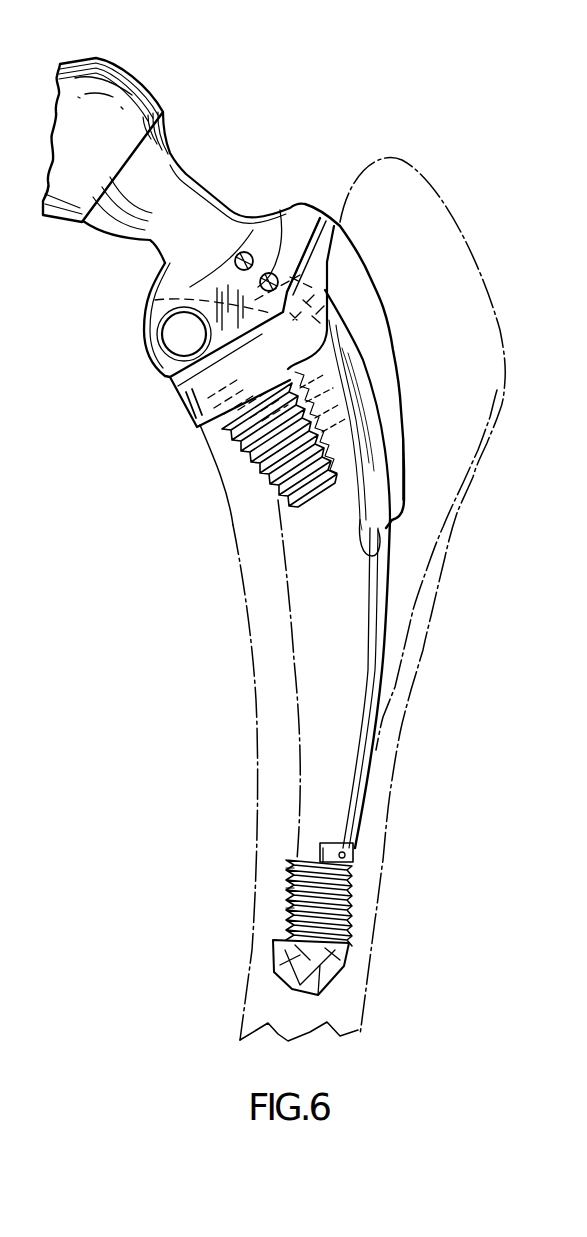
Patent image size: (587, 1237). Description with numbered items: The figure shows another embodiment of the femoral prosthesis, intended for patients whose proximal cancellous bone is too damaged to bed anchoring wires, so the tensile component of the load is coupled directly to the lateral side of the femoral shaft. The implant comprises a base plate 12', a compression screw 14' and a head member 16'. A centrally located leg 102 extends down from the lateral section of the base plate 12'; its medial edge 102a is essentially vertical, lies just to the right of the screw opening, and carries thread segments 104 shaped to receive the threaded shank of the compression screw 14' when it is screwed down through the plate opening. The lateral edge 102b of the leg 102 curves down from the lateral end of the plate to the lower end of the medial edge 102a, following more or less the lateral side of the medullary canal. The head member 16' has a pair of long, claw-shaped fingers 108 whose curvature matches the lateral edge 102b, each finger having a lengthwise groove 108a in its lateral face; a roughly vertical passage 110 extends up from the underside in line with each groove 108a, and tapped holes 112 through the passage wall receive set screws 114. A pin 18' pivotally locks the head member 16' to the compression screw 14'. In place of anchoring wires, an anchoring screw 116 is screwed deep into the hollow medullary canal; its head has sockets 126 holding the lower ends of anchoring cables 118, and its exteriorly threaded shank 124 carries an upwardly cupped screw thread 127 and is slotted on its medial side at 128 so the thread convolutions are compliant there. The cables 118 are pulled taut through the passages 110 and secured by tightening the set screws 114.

The head member 16' is at (174, 148).
The base plate 12' is at (218, 322).
The pin 18' is at (148, 335).
The compression screw 14' is at (251, 458).
The passage 110 is at (233, 257).
The tapped holes 112 is at (258, 262).
The set screws 114 is at (280, 212).
The leg 102 is at (400, 414).
The medial edge 102a is at (362, 540).
The lateral edge 102b is at (468, 478).
The thread segments 104 is at (290, 417).
The fingers 108 is at (372, 557).
The groove 108a is at (355, 610).
The anchoring screw 116 is at (305, 909).
The anchoring cables 118 is at (367, 652).
The threaded shank 124 is at (345, 928).
The sockets 126 is at (355, 847).
The screw thread 127 is at (355, 896).
The slot 128 is at (287, 923).